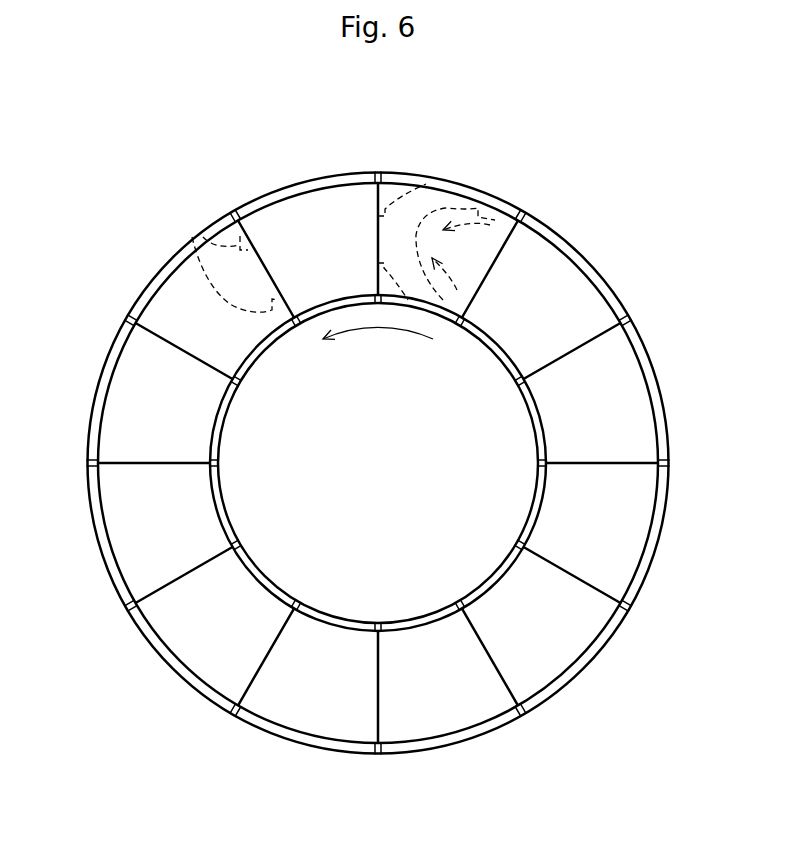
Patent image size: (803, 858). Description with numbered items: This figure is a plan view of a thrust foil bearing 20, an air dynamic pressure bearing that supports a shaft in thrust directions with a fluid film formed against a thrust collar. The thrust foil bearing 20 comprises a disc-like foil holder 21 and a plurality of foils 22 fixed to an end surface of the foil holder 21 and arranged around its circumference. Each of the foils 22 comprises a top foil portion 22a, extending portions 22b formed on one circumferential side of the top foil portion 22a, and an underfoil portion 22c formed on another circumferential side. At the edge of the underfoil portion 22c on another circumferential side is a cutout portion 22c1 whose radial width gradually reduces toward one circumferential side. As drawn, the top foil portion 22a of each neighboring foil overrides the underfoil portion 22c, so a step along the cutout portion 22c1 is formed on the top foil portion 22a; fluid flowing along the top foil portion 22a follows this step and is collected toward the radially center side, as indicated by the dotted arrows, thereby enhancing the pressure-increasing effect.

The thrust foil bearing 20 is at (622, 240).
The foil holder 21 is at (105, 567).
The foils 22 is at (572, 303).
The top foil portion 22a is at (307, 213).
The extending portions 22b is at (205, 232).
The underfoil portion 22c is at (410, 190).
The cutout portion 22c1 is at (460, 207).